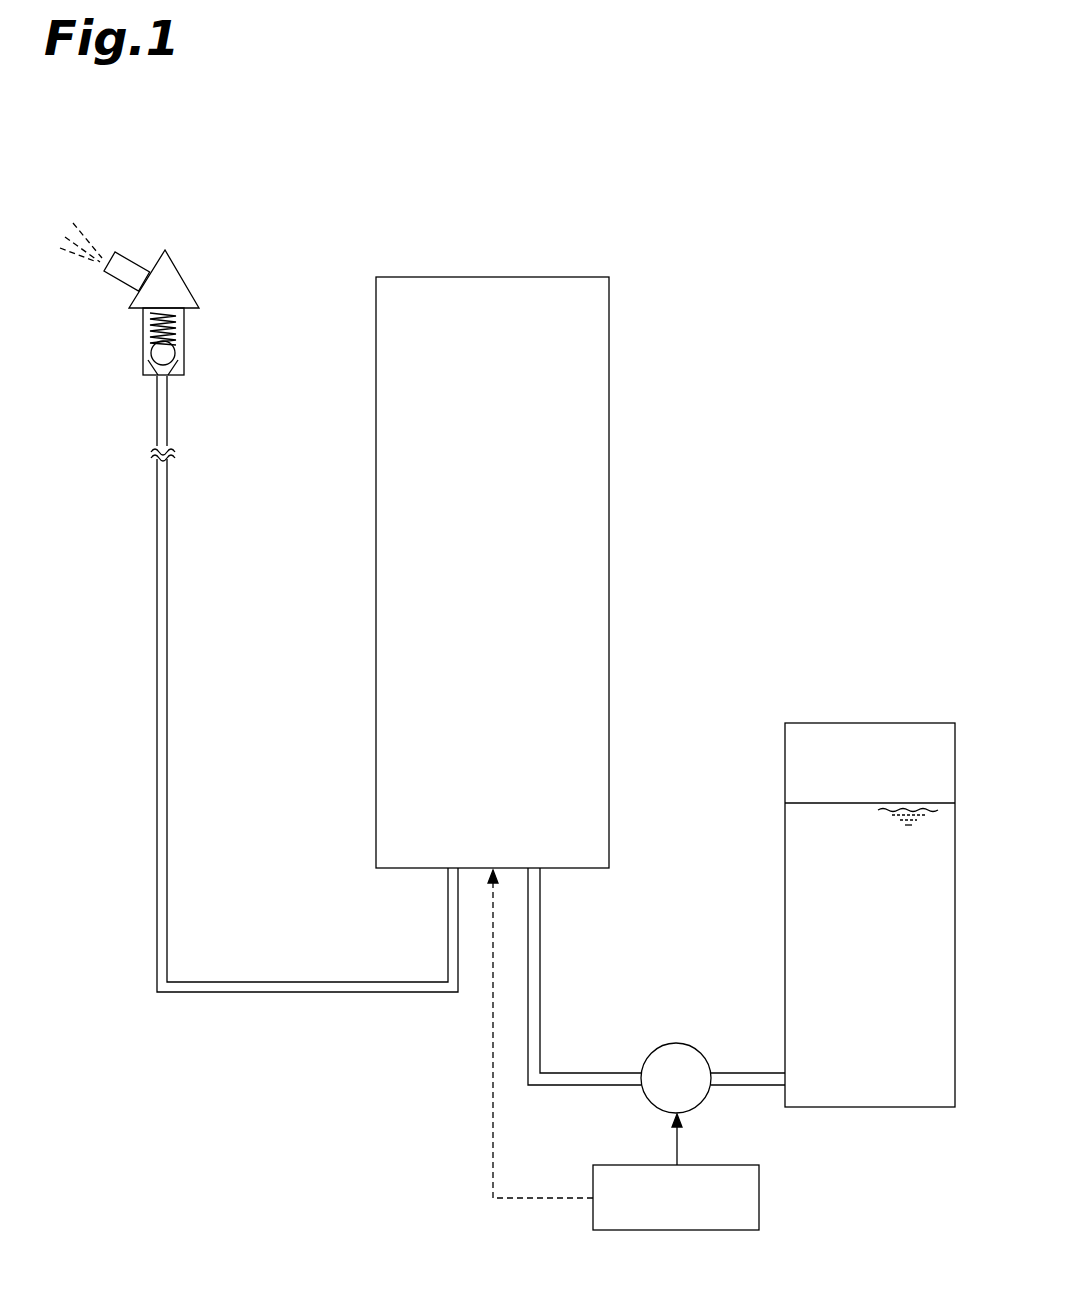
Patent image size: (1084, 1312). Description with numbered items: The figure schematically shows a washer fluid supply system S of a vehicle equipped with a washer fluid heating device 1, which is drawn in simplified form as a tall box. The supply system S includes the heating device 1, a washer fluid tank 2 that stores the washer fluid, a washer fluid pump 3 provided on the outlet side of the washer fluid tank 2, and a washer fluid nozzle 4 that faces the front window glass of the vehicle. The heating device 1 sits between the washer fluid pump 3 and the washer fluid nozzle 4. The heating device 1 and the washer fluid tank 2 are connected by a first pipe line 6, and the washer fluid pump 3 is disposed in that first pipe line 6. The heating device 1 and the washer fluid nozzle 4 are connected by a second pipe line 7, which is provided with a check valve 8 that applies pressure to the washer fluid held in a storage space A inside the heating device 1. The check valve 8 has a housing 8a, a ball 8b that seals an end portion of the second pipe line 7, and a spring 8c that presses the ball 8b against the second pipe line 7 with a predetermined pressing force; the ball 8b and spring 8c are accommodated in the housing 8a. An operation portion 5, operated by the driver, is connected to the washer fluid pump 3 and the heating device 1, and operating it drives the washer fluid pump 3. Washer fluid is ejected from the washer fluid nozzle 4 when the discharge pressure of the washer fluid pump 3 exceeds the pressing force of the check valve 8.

The washer fluid supply system S is at (736, 207).
The washer fluid heating device 1 is at (570, 277).
The storage space A is at (498, 587).
The washer fluid tank 2 is at (786, 868).
The washer fluid pump 3 is at (675, 1043).
The washer fluid nozzle 4 is at (137, 252).
The operation portion 5 is at (763, 1197).
The first pipe line 6 is at (587, 1072).
The second pipe line 7 is at (268, 982).
The check valve 8 is at (262, 297).
The housing 8a is at (184, 343).
The ball 8b is at (172, 363).
The spring 8c is at (184, 328).